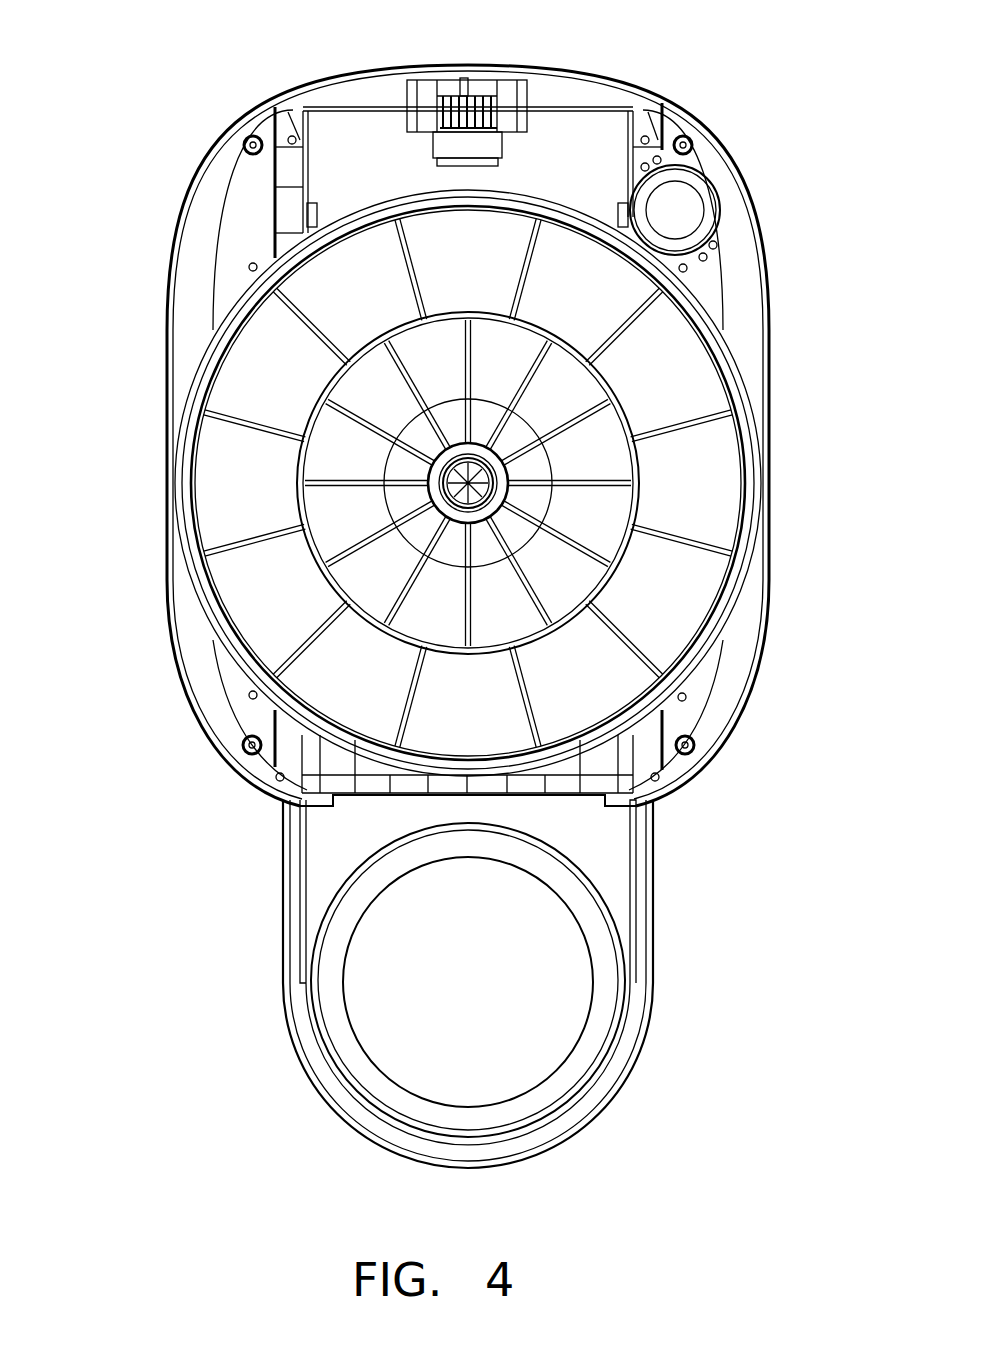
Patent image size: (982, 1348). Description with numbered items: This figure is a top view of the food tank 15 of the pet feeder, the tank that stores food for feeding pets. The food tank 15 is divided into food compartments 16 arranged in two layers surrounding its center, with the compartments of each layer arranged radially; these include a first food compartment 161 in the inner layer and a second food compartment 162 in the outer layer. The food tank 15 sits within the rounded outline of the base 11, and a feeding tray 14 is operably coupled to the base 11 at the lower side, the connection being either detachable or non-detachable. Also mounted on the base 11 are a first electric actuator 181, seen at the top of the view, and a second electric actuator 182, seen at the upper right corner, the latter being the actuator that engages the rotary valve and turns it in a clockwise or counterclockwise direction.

The base 11 is at (213, 208).
The feeding tray 14 is at (330, 843).
The food tank 15 is at (197, 352).
The food compartments 16 is at (380, 483).
The first food compartment 161 is at (333, 505).
The second food compartment 162 is at (228, 450).
The first electric actuator 181 is at (470, 125).
The second electric actuator 182 is at (675, 210).